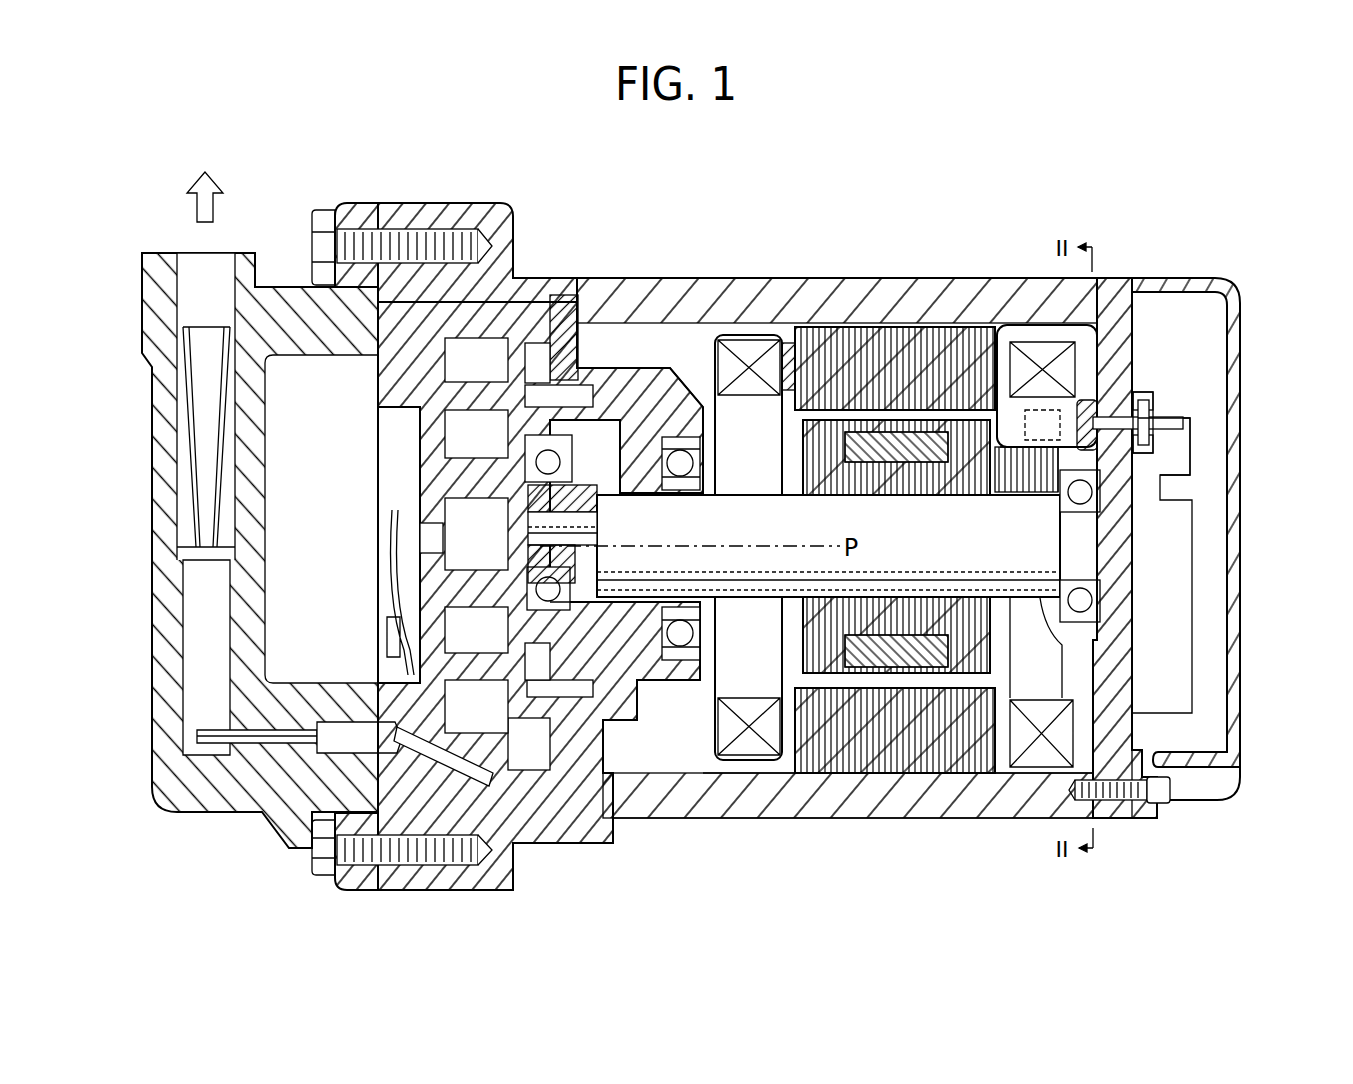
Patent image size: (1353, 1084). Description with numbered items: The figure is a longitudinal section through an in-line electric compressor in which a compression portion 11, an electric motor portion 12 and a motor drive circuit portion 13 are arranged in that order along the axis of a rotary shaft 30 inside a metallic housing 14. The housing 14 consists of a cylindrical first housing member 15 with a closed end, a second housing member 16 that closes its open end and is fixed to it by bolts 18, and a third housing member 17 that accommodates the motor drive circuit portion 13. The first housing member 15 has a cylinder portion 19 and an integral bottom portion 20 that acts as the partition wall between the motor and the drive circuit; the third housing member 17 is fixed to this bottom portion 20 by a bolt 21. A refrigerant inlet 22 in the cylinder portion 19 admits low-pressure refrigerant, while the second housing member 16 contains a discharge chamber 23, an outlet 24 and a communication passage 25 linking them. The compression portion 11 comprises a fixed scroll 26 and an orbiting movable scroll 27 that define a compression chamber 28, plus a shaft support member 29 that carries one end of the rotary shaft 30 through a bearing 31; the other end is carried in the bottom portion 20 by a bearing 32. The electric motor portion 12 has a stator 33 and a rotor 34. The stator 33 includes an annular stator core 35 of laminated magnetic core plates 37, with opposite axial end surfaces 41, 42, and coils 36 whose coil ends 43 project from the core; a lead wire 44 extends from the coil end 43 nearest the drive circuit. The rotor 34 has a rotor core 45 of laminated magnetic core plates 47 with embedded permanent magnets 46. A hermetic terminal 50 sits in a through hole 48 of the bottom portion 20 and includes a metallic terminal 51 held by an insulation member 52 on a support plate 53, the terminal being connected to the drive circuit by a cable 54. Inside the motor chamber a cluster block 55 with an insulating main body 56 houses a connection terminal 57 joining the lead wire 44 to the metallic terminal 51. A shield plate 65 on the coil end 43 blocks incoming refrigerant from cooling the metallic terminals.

The compression portion 11 is at (600, 368).
The electric motor portion 12 is at (903, 773).
The motor drive circuit portion 13 is at (1203, 564).
The housing 14 is at (776, 818).
The first housing member 15 is at (835, 819).
The second housing member 16 is at (220, 814).
The third housing member 17 is at (1241, 664).
The bolts 18 is at (311, 247).
The cylinder portion 19 is at (958, 806).
The bottom portion 20 is at (1117, 670).
The bolt 21 is at (1171, 805).
The refrigerant inlet 22 is at (1137, 338).
The discharge chamber 23 is at (313, 502).
The outlet 24 is at (187, 251).
The communication passage 25 is at (185, 315).
The fixed scroll 26 is at (376, 402).
The movable scroll 27 is at (505, 287).
The compression chamber 28 is at (464, 374).
The shaft support member 29 is at (640, 699).
The rotary shaft 30 is at (745, 487).
The bearing 31 is at (697, 492).
The bearing 32 is at (1102, 606).
The stator 33 is at (790, 328).
The rotor 34 is at (801, 628).
The stator core 35 is at (852, 325).
The coils 36 is at (1035, 819).
The magnetic core plates 37 is at (890, 326).
The axial end surface 41 is at (762, 758).
The axial end surface 42 is at (1003, 775).
The coil ends 43 is at (714, 749).
The lead wire 44 is at (1036, 625).
The rotor core 45 is at (791, 497).
The permanent magnets 46 is at (896, 478).
The magnetic core plates 47 is at (876, 496).
The through hole 48 is at (1128, 398).
The hermetic terminal 50 is at (1162, 397).
The metallic terminal 51 is at (1184, 417).
The insulation member 52 is at (1162, 405).
The support plate 53 is at (1145, 456).
The cable 54 is at (1193, 447).
The cluster block 55 is at (1012, 503).
The main body 56 is at (1022, 442).
The connection terminal 57 is at (1028, 455).
The shield plate 65 is at (1072, 330).